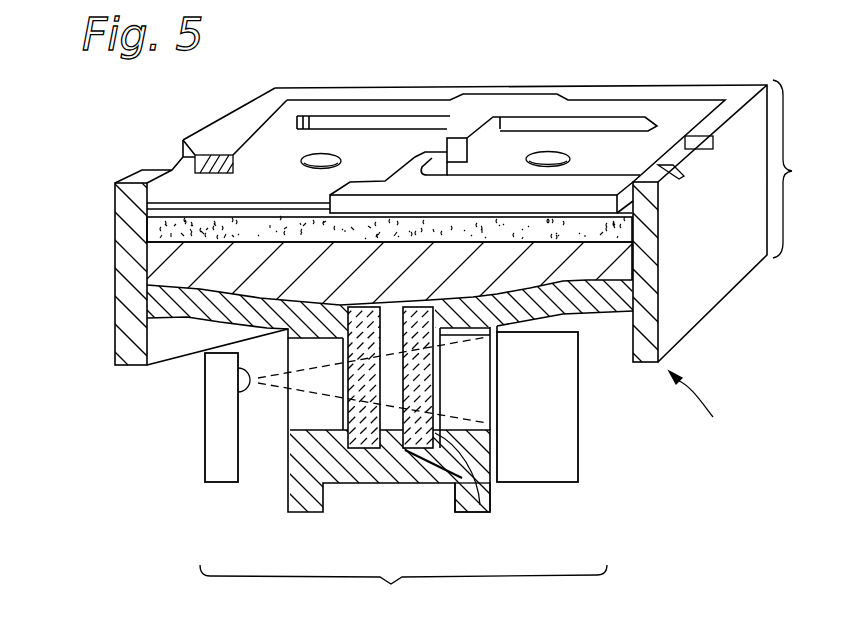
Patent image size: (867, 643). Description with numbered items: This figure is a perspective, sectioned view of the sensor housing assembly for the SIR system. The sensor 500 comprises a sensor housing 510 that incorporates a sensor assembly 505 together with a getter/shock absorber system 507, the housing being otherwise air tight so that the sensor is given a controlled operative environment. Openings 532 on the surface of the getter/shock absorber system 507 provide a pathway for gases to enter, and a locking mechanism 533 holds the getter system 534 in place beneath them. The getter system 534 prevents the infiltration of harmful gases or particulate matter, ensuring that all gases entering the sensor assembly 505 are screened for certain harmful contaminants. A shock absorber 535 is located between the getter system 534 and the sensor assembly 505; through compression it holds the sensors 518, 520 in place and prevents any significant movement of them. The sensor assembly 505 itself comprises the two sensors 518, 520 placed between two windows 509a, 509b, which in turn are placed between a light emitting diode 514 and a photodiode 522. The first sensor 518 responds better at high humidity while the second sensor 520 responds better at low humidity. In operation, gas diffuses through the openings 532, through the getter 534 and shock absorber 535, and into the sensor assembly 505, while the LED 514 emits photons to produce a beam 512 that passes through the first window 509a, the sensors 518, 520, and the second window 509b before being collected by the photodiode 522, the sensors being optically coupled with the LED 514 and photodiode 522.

The sensor 500 is at (721, 410).
The sensor assembly 505 is at (403, 595).
The getter/shock absorber system 507 is at (812, 169).
The first window 509a is at (300, 417).
The second window 509b is at (477, 362).
The sensor housing 510 is at (738, 93).
The beam 512 is at (272, 391).
The light emitting diode (LED) 514 is at (220, 345).
The first sensor 518 is at (352, 446).
The second sensor 520 is at (478, 513).
The photodiode 522 is at (580, 344).
The openings 532 is at (327, 154).
The locking mechanism 533 is at (253, 113).
The getter system 534 is at (165, 250).
The shock absorber 535 is at (172, 282).